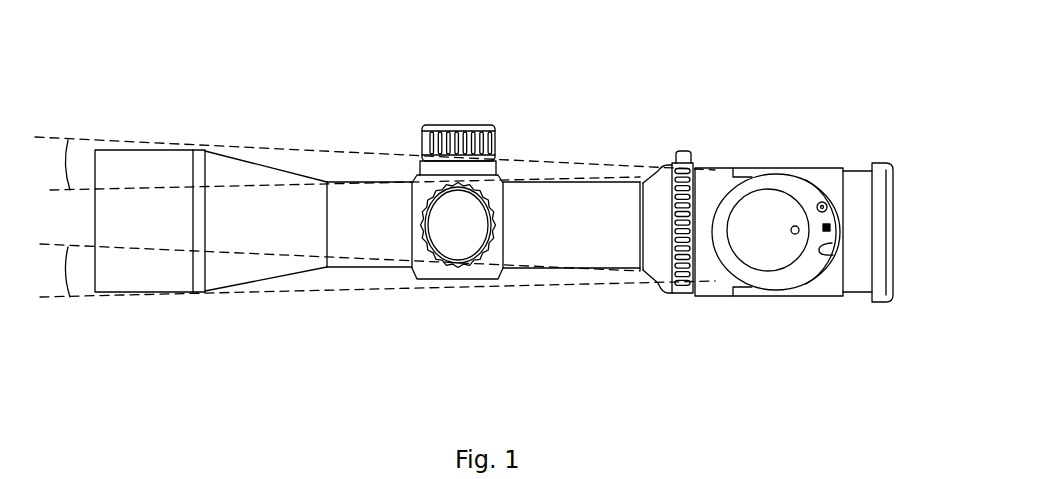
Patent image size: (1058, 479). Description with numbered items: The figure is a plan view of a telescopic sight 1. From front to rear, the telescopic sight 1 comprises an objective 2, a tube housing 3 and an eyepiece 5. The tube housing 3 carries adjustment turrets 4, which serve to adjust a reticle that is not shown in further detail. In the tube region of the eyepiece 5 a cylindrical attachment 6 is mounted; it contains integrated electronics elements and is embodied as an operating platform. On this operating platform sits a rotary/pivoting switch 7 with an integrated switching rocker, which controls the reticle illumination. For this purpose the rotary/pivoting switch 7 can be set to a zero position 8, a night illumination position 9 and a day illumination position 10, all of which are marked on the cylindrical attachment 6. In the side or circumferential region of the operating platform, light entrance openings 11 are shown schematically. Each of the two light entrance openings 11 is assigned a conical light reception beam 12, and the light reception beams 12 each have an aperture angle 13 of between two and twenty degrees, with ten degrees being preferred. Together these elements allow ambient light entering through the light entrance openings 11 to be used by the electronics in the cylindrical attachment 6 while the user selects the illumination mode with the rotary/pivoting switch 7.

The telescopic sight 1 is at (383, 118).
The objective 2 is at (158, 133).
The tube housing 3 is at (552, 213).
The adjustment turrets 4 is at (453, 127).
The eyepiece 5 is at (784, 306).
The cylindrical attachment 6 is at (757, 180).
The rotary/pivoting switch 7 is at (798, 203).
The zero position 8 is at (830, 227).
The night illumination position 9 is at (837, 247).
The day illumination position 10 is at (828, 207).
The light entrance openings 11 is at (732, 172).
The light reception beams 12 is at (275, 157).
The aperture angle 13 is at (68, 164).